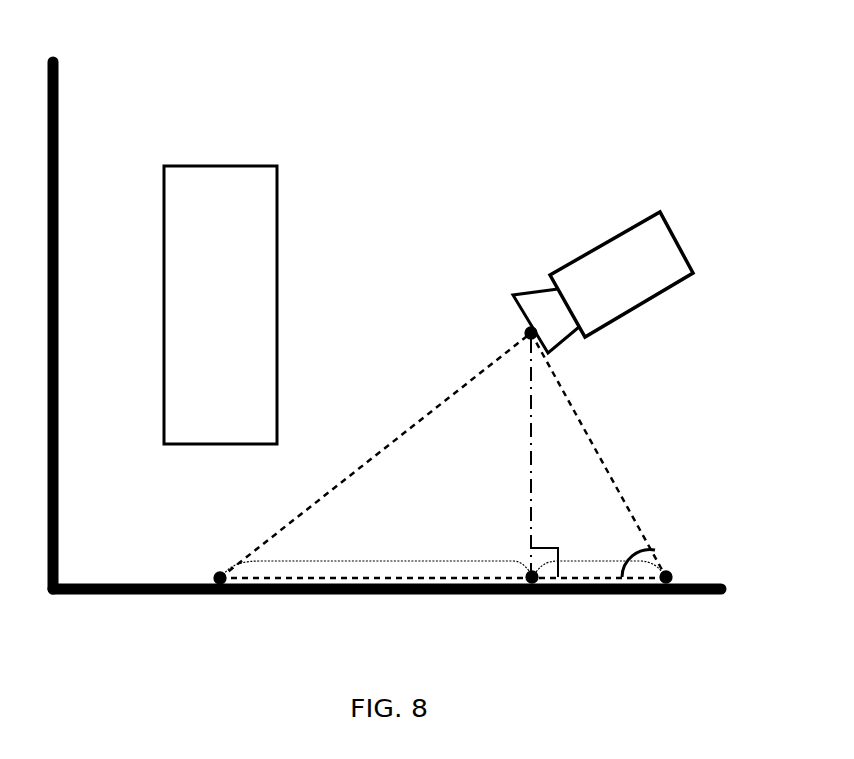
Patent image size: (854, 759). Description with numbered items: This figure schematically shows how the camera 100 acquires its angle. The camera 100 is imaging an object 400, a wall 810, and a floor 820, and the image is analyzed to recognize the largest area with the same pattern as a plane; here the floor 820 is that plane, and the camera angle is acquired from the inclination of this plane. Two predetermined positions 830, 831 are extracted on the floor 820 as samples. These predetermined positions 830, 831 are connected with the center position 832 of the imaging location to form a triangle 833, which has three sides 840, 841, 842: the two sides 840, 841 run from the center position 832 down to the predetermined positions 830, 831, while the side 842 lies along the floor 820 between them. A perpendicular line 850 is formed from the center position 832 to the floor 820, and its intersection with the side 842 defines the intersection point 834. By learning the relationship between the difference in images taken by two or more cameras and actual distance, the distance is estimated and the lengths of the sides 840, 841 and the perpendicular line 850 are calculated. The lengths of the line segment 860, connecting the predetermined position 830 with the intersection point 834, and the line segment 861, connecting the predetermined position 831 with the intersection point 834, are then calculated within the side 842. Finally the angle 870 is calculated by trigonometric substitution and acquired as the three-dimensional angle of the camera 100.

The wall 810 is at (57, 56).
The floor 820 is at (690, 583).
The object 400 is at (257, 173).
The camera 100 is at (655, 223).
The center position of the imaging location 832 is at (533, 326).
The predetermined position 830 is at (217, 575).
The predetermined position 831 is at (668, 572).
The intersection point 834 is at (528, 572).
The triangle 833 is at (407, 450).
The side 840 is at (480, 373).
The side 841 is at (587, 427).
The side 842 is at (425, 578).
The perpendicular line 850 is at (535, 497).
The line segment 860 is at (373, 561).
The line segment 861 is at (597, 561).
The angle 870 is at (637, 547).